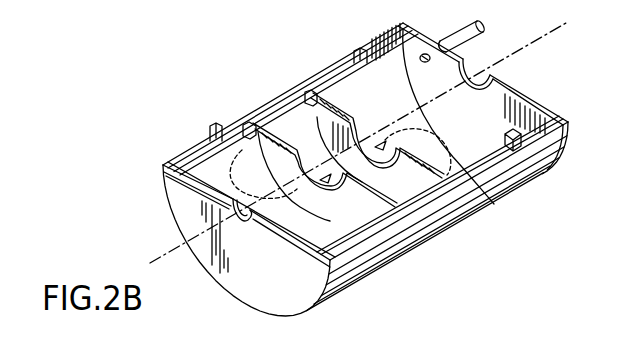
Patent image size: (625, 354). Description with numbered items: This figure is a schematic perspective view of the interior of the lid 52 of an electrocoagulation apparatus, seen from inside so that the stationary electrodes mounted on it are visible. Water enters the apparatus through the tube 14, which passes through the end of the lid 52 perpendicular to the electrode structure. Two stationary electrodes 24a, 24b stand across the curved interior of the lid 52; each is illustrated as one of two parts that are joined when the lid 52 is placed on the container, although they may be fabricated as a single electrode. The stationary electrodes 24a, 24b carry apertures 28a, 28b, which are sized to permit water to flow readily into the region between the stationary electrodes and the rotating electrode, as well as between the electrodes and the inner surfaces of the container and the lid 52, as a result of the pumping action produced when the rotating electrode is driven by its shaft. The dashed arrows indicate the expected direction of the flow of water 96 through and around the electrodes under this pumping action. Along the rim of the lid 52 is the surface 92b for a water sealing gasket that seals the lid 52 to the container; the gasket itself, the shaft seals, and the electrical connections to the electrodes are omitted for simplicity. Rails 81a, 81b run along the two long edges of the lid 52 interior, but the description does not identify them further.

The lid 52 is at (134, 115).
The tube 14 is at (484, 30).
The first rail 81a is at (270, 110).
The second rail 81b is at (478, 193).
The water sealing gasket surface 92b is at (193, 150).
The flow of water 96 is at (195, 185).
The aperture 28a is at (370, 255).
The aperture 28b is at (462, 212).
The stationary electrode 24a is at (345, 265).
The stationary electrode 24b is at (425, 218).